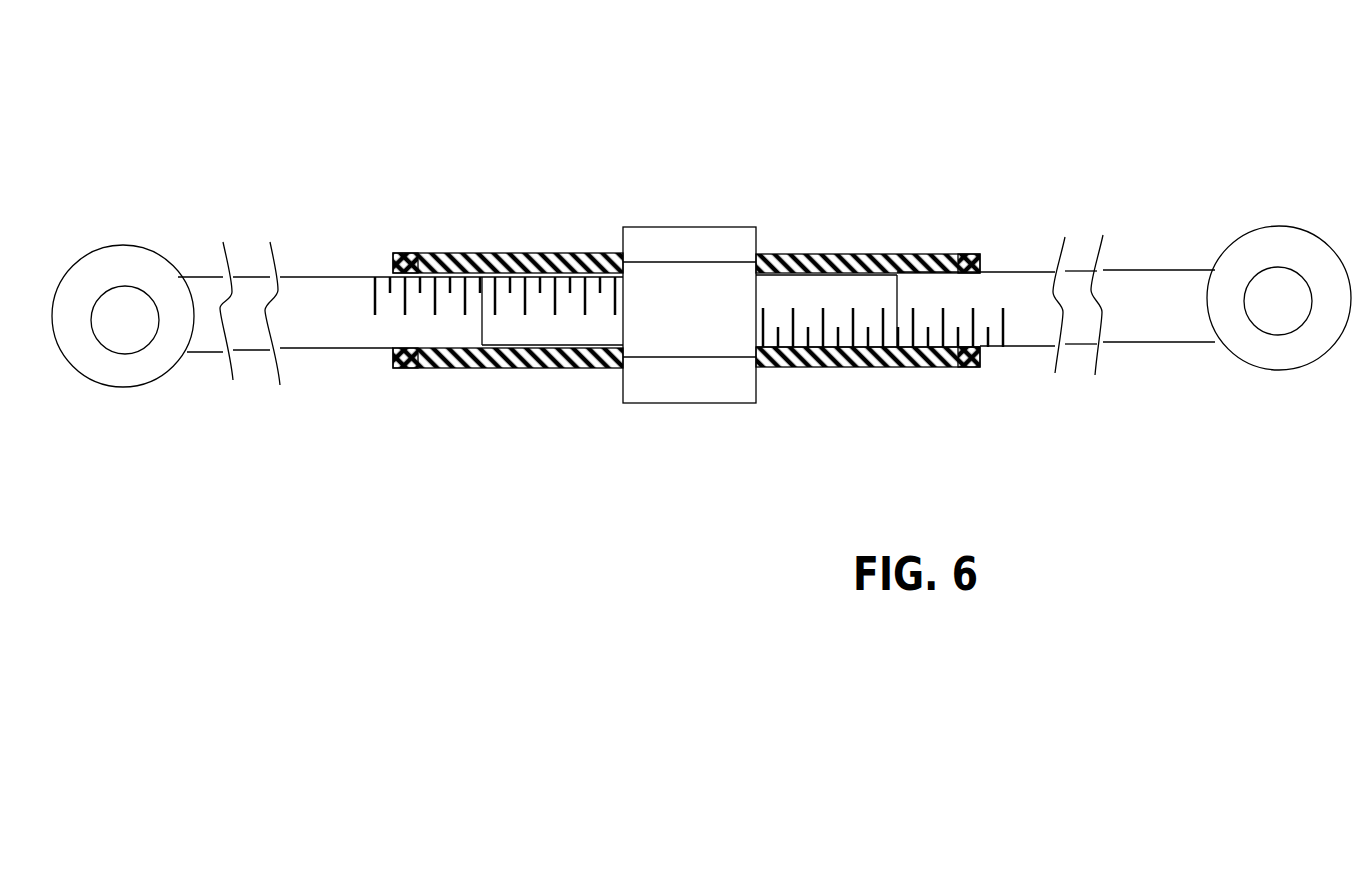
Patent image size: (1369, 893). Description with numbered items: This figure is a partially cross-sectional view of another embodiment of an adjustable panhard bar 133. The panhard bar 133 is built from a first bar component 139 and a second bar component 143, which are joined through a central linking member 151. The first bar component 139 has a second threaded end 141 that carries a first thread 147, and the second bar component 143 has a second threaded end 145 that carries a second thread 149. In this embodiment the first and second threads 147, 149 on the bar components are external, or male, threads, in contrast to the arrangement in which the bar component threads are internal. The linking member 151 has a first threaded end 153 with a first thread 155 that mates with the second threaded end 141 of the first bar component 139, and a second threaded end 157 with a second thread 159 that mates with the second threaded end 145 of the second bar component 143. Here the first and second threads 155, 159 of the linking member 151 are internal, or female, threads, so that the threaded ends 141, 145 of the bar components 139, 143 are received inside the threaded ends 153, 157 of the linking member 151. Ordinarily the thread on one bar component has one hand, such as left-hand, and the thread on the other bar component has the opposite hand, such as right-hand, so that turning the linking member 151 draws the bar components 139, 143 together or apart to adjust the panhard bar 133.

The panhard bar 133 is at (928, 160).
The first bar component 139 is at (1035, 232).
The second threaded end of the first bar component 141 is at (866, 252).
The second bar component 143 is at (383, 222).
The second threaded end of the second bar component 145 is at (505, 254).
The first thread 147 is at (915, 368).
The second thread 149 is at (450, 305).
The linking member 151 is at (671, 430).
The first threaded end of the linking member 153 is at (827, 368).
The first thread of the linking member 155 is at (780, 330).
The second threaded end of the linking member 157 is at (575, 368).
The second thread of the linking member 159 is at (600, 255).